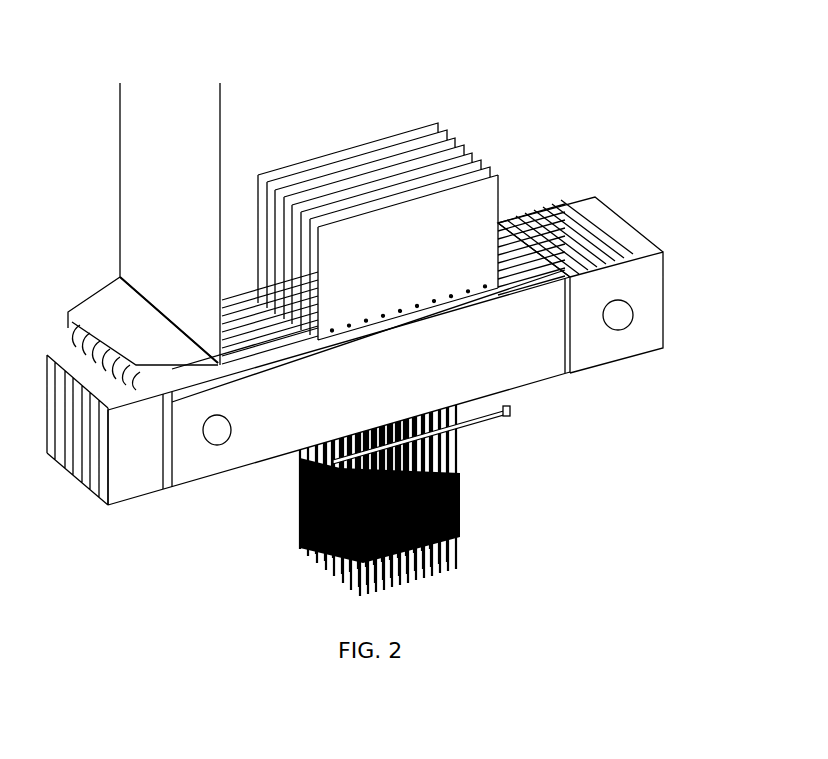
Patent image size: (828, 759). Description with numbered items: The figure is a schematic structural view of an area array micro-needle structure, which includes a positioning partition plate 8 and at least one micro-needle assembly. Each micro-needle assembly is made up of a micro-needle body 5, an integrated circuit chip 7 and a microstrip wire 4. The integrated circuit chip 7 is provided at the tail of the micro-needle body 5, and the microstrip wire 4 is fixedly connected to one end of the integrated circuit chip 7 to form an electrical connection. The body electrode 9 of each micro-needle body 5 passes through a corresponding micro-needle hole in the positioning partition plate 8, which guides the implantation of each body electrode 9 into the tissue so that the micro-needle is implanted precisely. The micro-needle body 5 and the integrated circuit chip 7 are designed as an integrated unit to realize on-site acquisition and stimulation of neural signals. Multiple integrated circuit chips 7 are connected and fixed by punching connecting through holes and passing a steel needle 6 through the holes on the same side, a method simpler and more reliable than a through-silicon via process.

The microstrip wire 4 is at (140, 178).
The micro-needle body 5 is at (498, 197).
The steel needle 6 is at (623, 320).
The integrated circuit chip 7 is at (527, 357).
The positioning partition plate 8 is at (468, 434).
The body electrode 9 is at (460, 522).